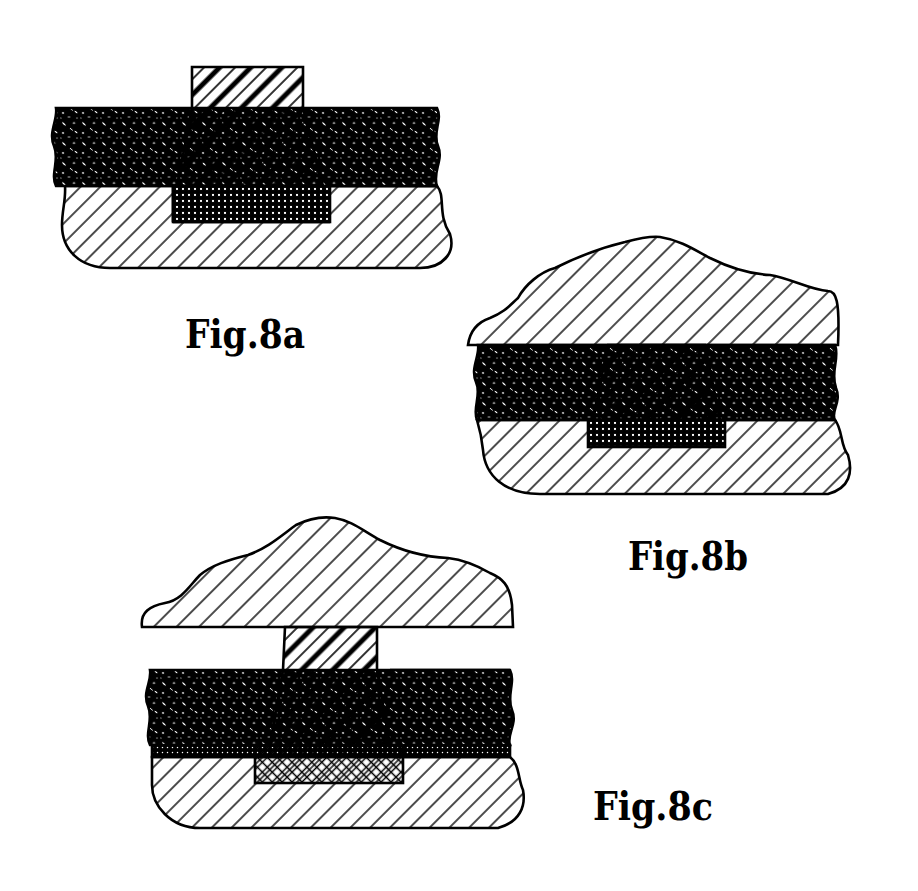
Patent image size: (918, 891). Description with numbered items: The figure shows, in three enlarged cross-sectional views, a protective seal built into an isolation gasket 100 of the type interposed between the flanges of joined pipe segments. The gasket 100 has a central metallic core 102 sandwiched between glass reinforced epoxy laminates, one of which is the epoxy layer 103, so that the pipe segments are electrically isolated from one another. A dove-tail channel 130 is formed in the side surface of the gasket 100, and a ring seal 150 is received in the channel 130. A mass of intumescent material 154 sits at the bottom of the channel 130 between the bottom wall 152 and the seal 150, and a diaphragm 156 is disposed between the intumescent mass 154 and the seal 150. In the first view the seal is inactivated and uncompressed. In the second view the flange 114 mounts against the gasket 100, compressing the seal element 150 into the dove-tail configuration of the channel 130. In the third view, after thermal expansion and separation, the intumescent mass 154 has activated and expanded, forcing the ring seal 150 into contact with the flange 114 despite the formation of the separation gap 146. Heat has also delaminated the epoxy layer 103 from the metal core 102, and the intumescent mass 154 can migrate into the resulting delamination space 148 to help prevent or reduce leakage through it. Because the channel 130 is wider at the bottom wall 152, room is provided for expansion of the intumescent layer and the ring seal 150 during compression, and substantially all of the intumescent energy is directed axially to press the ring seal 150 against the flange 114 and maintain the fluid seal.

In FIG. 8A, the isolation gasket 100 is at (261, 167).
In FIG. 8B, the isolation gasket 100 is at (631, 369).
In FIG. 8A, the central metallic core 102 is at (360, 262).
In FIG. 8B, the central metallic core 102 is at (523, 460).
In FIG. 8C, the central metallic core 102 is at (495, 812).
In FIG. 8A, the glass reinforced epoxy laminate 103 is at (338, 107).
In FIG. 8B, the glass reinforced epoxy laminate 103 is at (490, 393).
In FIG. 8C, the glass reinforced epoxy laminate 103 is at (507, 697).
In FIG. 8B, the flange 114 is at (650, 242).
In FIG. 8C, the flange 114 is at (487, 605).
In FIG. 8A, the dove-tail channel 130 is at (207, 226).
In FIG. 8B, the dove-tail channel 130 is at (617, 450).
In FIG. 8C, the separation gap 146 is at (490, 650).
In FIG. 8C, the delamination space 148 is at (503, 778).
In FIG. 8A, the ring seal 150 is at (232, 74).
In FIG. 8B, the ring seal 150 is at (707, 450).
In FIG. 8C, the ring seal 150 is at (330, 686).
In FIG. 8A, the bottom wall 152 is at (272, 226).
In FIG. 8A, the intumescent material 154 is at (180, 228).
In FIG. 8C, the intumescent material 154 is at (327, 783).
In FIG. 8A, the diaphragm 156 is at (405, 200).